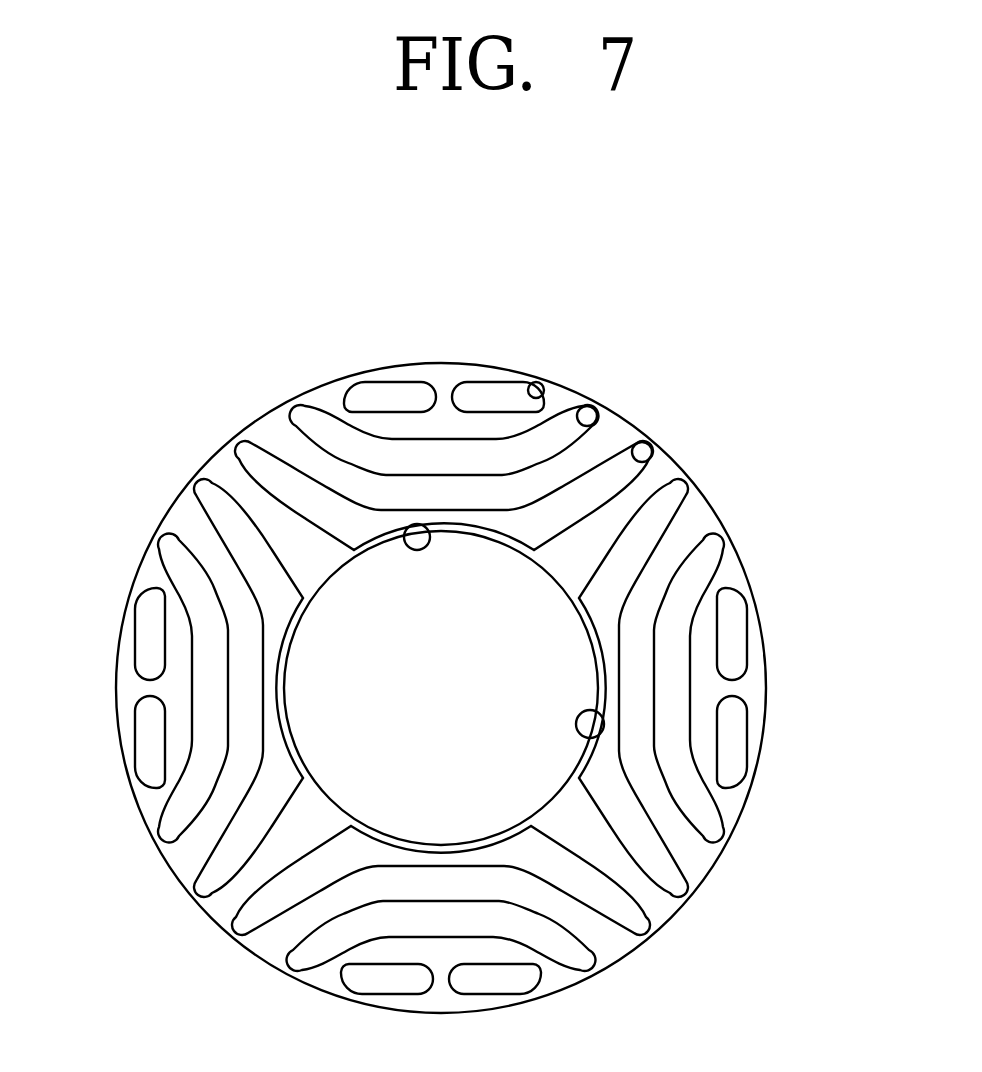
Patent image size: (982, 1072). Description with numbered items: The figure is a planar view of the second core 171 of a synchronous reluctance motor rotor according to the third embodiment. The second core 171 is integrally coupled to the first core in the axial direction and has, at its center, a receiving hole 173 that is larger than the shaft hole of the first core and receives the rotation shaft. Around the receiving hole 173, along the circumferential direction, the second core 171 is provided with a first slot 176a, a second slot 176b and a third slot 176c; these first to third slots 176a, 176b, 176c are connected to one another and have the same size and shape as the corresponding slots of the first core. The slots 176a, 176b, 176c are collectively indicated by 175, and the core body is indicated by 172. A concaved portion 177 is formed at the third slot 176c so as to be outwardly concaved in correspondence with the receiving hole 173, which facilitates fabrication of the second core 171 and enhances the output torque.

The second core 171 is at (166, 463).
The rotor core 172 is at (648, 486).
The receiving hole 173 is at (599, 708).
The flux barrier 175 is at (779, 349).
The first slot 176a is at (541, 384).
The second slot 176b is at (594, 409).
The third slot 176c is at (652, 443).
The concaved portion 177 is at (409, 527).